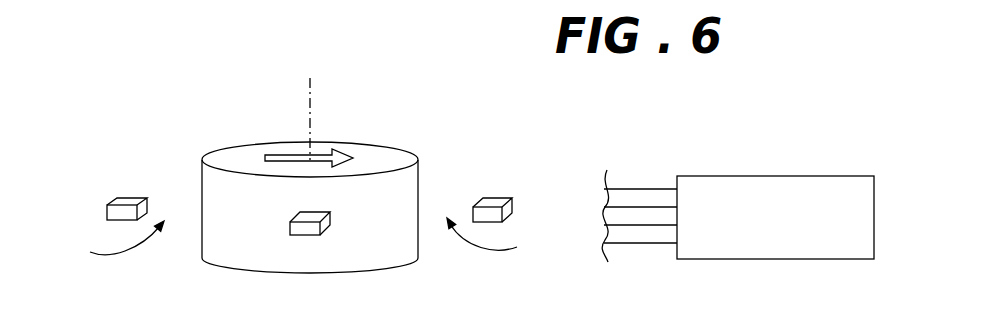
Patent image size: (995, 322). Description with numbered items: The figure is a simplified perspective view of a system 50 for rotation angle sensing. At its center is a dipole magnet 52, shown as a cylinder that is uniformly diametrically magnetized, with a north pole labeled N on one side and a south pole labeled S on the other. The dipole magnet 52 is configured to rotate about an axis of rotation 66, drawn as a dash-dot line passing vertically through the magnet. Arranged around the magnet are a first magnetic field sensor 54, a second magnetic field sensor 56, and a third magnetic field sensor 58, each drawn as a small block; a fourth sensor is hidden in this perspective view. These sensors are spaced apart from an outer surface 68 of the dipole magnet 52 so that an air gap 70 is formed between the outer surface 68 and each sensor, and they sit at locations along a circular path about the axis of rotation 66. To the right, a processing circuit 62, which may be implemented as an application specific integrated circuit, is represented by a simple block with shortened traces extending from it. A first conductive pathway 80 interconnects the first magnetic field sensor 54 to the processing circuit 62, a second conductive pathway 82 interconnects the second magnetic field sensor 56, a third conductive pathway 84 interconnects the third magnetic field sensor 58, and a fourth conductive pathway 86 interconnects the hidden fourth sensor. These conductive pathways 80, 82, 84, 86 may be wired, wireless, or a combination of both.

The system for rotation angle sensing 50 is at (108, 86).
The dipole magnet 52 is at (205, 158).
The first magnetic field sensor 54 is at (493, 198).
The second magnetic field sensor 56 is at (300, 213).
The third magnetic field sensor 58 is at (122, 198).
The processing circuit 62 is at (802, 176).
The axis of rotation 66 is at (308, 102).
The outer surface 68 is at (202, 213).
The air gap 70 is at (304, 238).
The first conductive pathway 80 is at (660, 189).
The second conductive pathway 82 is at (618, 215).
The third conductive pathway 84 is at (618, 215).
The fourth conductive pathway 86 is at (660, 243).